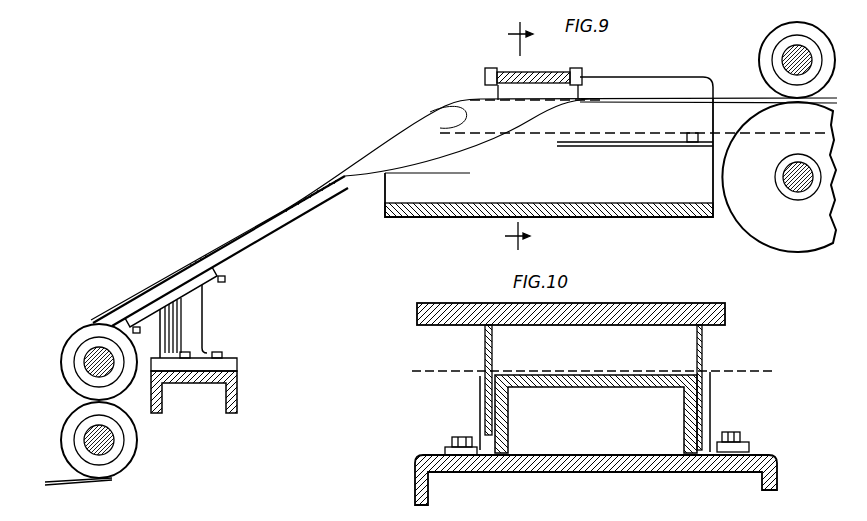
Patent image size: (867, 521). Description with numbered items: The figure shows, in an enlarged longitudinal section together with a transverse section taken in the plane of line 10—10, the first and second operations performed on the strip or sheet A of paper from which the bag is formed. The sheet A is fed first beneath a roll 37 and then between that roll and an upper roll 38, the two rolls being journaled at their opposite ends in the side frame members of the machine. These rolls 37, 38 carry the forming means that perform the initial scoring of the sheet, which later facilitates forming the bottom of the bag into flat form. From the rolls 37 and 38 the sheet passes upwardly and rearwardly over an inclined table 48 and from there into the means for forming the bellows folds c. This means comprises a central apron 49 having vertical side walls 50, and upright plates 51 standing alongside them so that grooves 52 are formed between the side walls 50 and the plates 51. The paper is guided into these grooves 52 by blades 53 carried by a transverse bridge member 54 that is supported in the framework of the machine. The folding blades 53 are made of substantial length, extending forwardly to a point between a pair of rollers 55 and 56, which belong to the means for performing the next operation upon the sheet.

In FIG. 9, the line 10— 10 is at (506, 138).
In FIG. 9, the roll 37 is at (127, 450).
In FIG. 9, the roll 38 is at (93, 330).
In FIG. 9, the table 48 is at (192, 283).
In FIG. 10, the central apron 49 is at (602, 386).
In FIG. 10, the vertical side walls 50 is at (510, 429).
In FIG. 9, the upright plates 51 is at (630, 125).
In FIG. 10, the upright plates 51 is at (480, 408).
In FIG. 10, the grooves 52 is at (706, 440).
In FIG. 9, the blades 53 is at (657, 82).
In FIG. 10, the blades 53 is at (494, 363).
In FIG. 9, the transverse bridge member 54 is at (492, 66).
In FIG. 10, the transverse bridge member 54 is at (631, 303).
In FIG. 9, the roller 55 is at (776, 40).
In FIG. 9, the roller 56 is at (779, 177).
In FIG. 9, the strip or sheet A is at (362, 162).
In FIG. 10, the bellows folds C is at (703, 420).